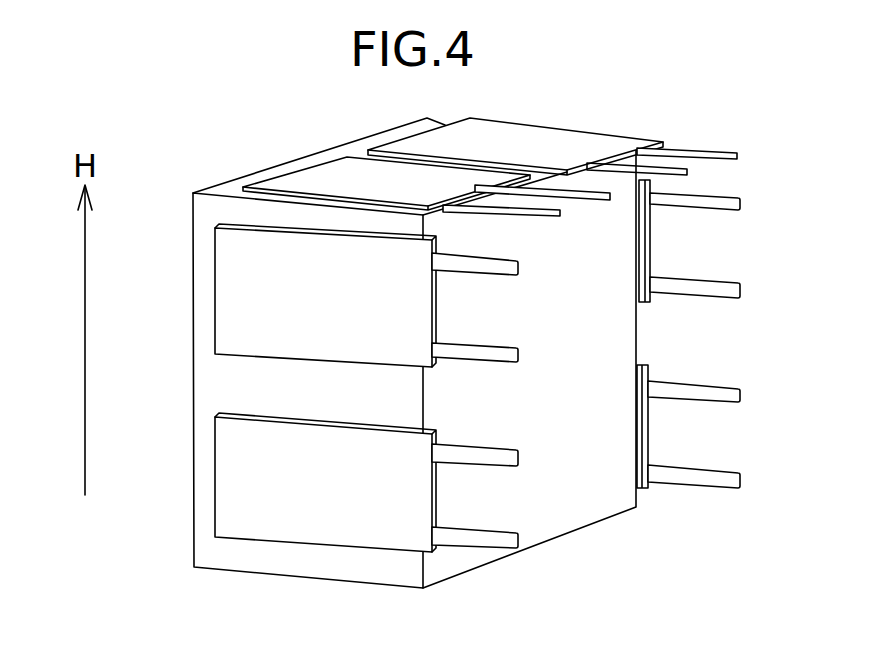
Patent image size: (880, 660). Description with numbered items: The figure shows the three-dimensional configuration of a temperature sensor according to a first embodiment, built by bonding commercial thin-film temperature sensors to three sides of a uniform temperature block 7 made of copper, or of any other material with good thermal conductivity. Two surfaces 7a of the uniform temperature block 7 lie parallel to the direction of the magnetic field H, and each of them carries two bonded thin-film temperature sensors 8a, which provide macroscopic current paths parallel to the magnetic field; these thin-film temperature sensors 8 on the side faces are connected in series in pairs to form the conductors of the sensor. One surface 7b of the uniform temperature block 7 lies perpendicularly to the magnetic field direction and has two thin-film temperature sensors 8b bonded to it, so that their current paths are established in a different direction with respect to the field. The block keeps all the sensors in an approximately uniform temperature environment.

The uniform temperature block 7 is at (388, 348).
The surfaces lying parallel to the magnetic field direction 7a is at (220, 382).
The surface lying perpendicular to the magnetic field direction 7b is at (357, 150).
The terminal plate 8 is at (223, 433).
The thin-film temperature sensor 8a is at (220, 295).
The thin-film temperature sensor 8b is at (310, 172).